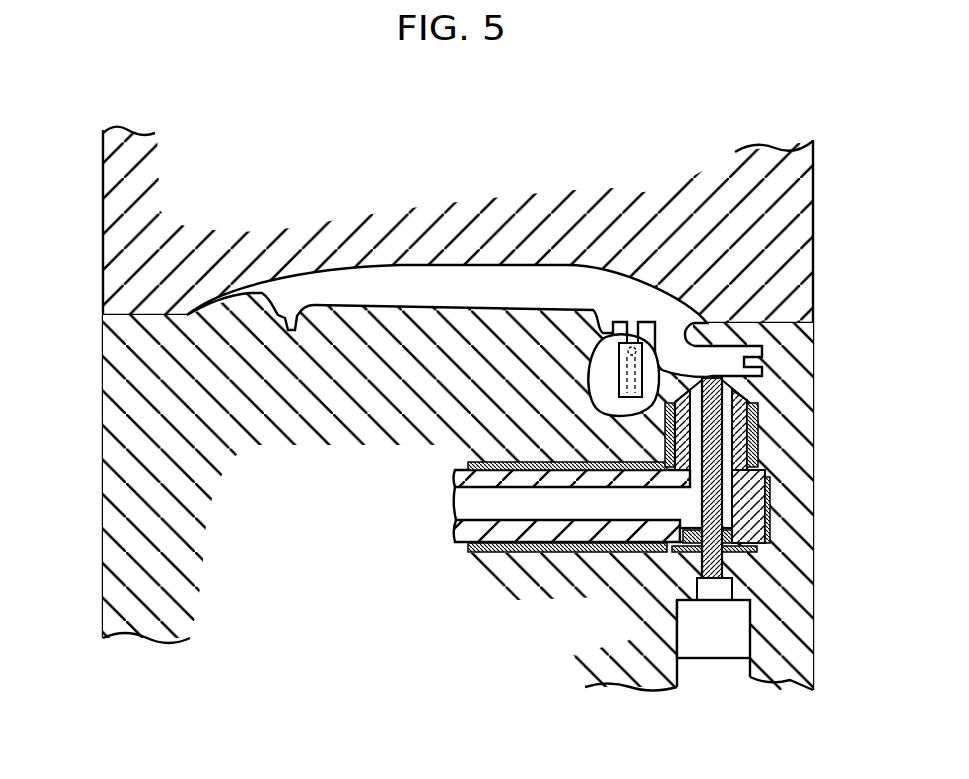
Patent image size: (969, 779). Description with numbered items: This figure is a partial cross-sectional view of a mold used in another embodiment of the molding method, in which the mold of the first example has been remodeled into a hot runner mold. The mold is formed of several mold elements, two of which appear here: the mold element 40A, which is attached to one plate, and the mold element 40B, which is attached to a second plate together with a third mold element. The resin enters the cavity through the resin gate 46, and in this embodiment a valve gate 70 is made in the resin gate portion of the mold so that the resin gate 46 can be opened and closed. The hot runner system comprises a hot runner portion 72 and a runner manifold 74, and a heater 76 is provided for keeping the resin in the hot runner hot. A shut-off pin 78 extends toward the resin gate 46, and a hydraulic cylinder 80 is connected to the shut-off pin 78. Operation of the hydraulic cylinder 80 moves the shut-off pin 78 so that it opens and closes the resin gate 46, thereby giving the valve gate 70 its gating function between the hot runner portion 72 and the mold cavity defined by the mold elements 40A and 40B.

The mold element 40A is at (104, 257).
The mold element 40B is at (104, 480).
The resin gate 46 is at (713, 373).
The valve gate 70 is at (757, 582).
The hot runner portion 72 is at (503, 503).
The runner manifold 74 is at (557, 462).
The heater 76 is at (615, 462).
The shut-off pin 78 is at (758, 437).
The hydraulic cylinder 80 is at (728, 650).